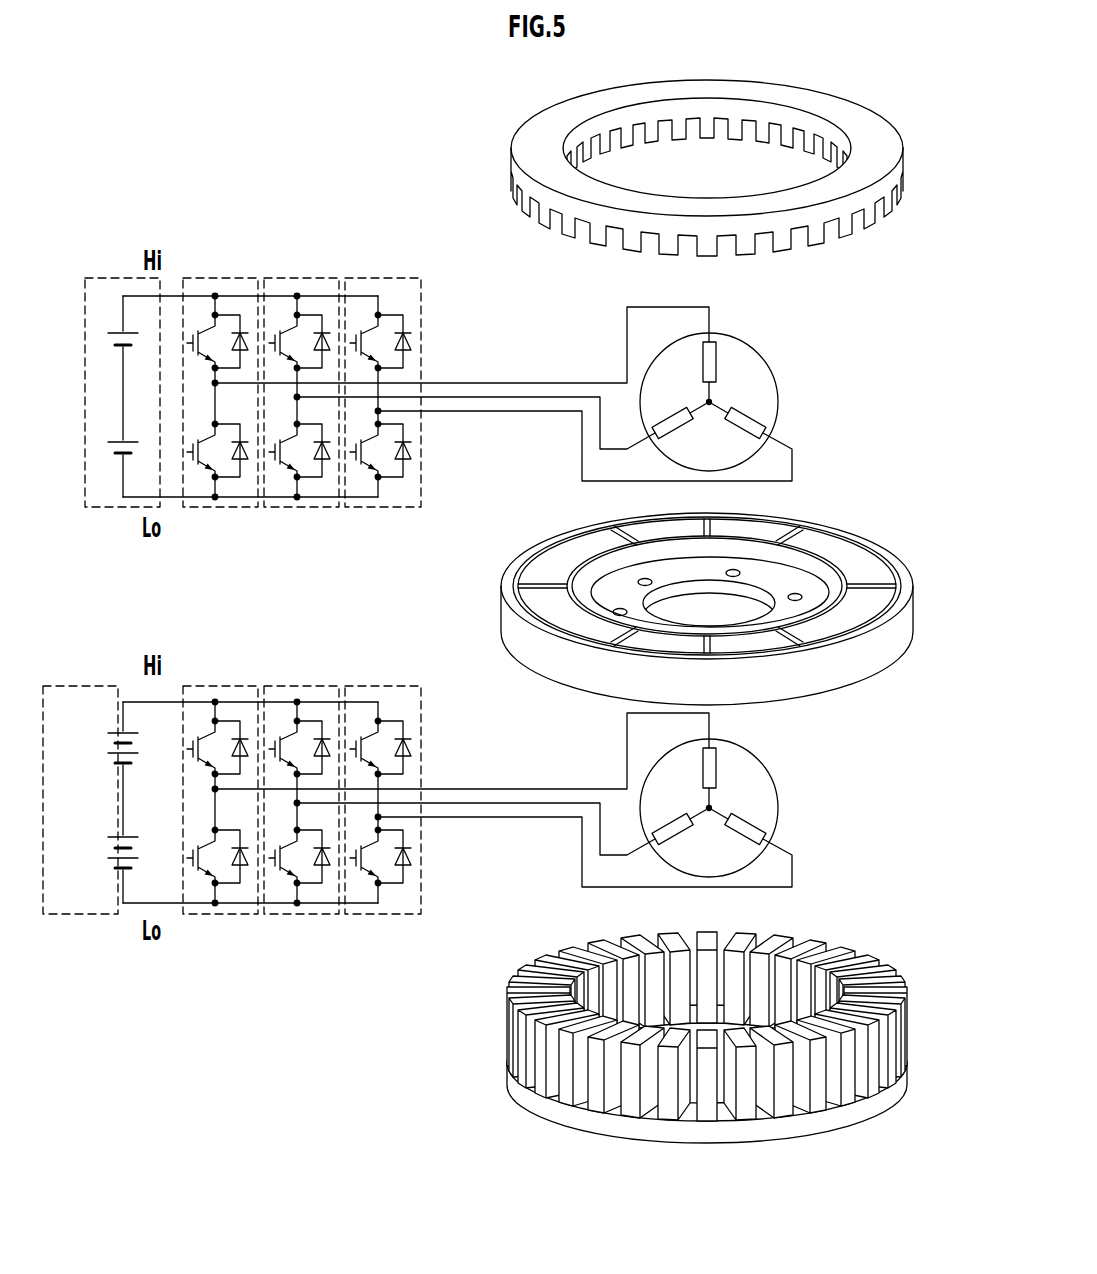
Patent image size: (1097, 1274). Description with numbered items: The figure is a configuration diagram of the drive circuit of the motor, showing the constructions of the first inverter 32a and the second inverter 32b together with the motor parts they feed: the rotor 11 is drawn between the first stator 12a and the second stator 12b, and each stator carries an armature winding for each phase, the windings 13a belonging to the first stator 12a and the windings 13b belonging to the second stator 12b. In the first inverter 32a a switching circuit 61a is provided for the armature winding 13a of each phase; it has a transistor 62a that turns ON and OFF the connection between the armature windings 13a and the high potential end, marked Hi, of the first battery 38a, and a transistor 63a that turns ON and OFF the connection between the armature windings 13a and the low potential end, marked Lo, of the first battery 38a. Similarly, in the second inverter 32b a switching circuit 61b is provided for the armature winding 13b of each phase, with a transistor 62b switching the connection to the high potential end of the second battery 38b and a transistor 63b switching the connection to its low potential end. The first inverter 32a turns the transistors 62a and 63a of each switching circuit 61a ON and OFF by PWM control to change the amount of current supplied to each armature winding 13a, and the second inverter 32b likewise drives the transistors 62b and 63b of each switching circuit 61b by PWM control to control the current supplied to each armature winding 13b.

The rotor 11 is at (853, 523).
The first stator 12a is at (850, 927).
The second stator 12b is at (808, 70).
The armature winding 13a is at (718, 763).
The armature winding 13b is at (718, 357).
The first inverter 32a is at (295, 788).
The second inverter 32b is at (295, 382).
The first battery 38a is at (95, 680).
The second battery 38b is at (95, 272).
The switching circuit 61a is at (215, 790).
The switching circuit 61b is at (215, 386).
The transistor 62a is at (207, 736).
The transistor 62b is at (207, 330).
The transistor 63a is at (209, 869).
The transistor 63b is at (209, 463).